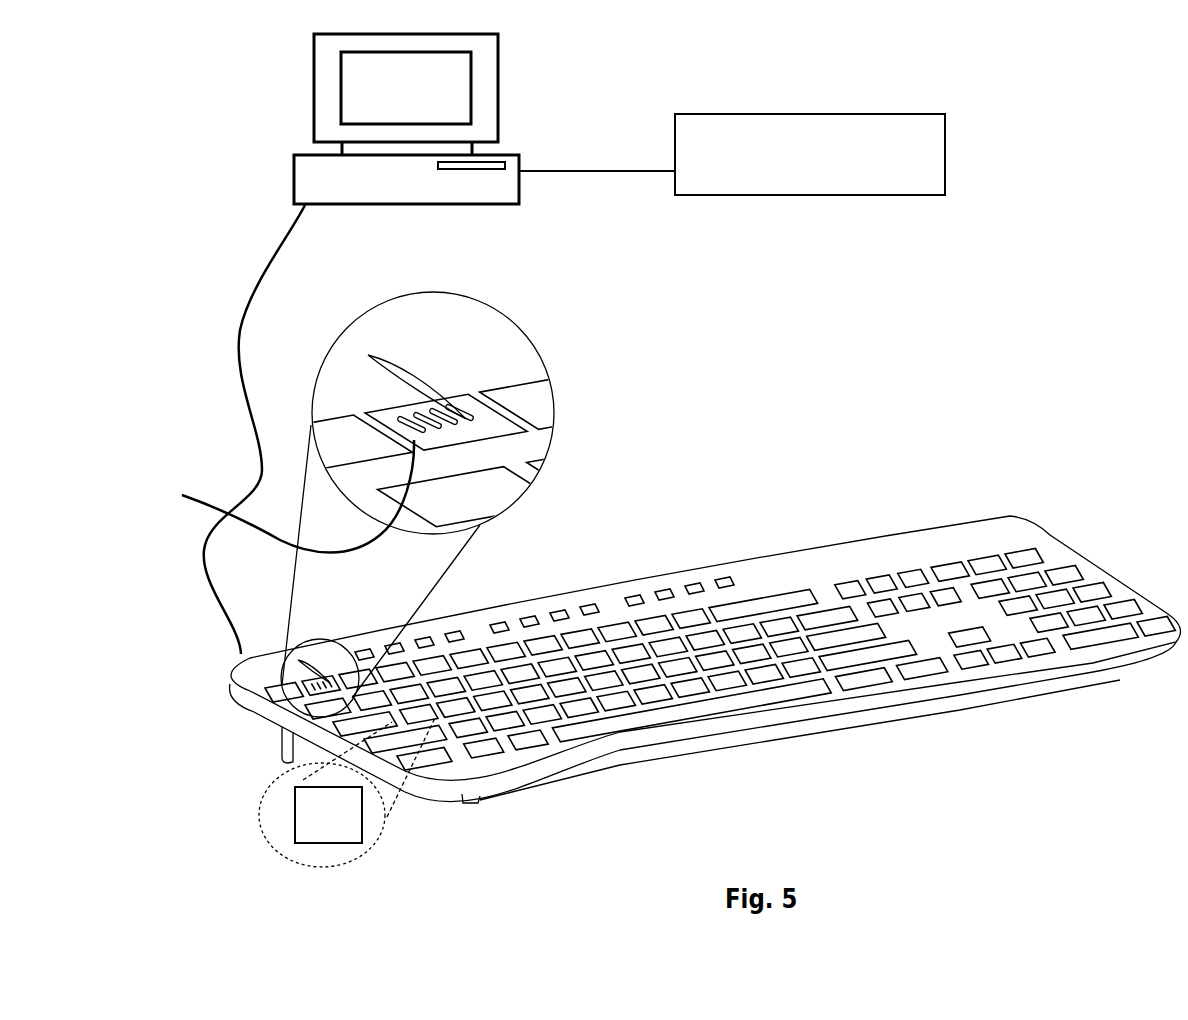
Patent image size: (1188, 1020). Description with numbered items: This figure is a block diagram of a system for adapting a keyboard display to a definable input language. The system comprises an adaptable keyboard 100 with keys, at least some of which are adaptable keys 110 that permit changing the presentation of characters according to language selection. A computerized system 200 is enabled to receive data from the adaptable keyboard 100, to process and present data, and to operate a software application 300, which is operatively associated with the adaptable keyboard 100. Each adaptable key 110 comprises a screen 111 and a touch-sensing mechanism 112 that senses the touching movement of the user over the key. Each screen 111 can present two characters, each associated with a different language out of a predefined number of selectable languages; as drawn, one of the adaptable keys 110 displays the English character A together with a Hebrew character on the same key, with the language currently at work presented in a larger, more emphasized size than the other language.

The adaptable keyboard 100 is at (1010, 517).
The adaptable key 110 is at (512, 430).
The screen 111 is at (414, 440).
The touch-sensing mechanism 112 is at (268, 496).
The computerized system 200 is at (314, 79).
The software application 300 is at (945, 157).